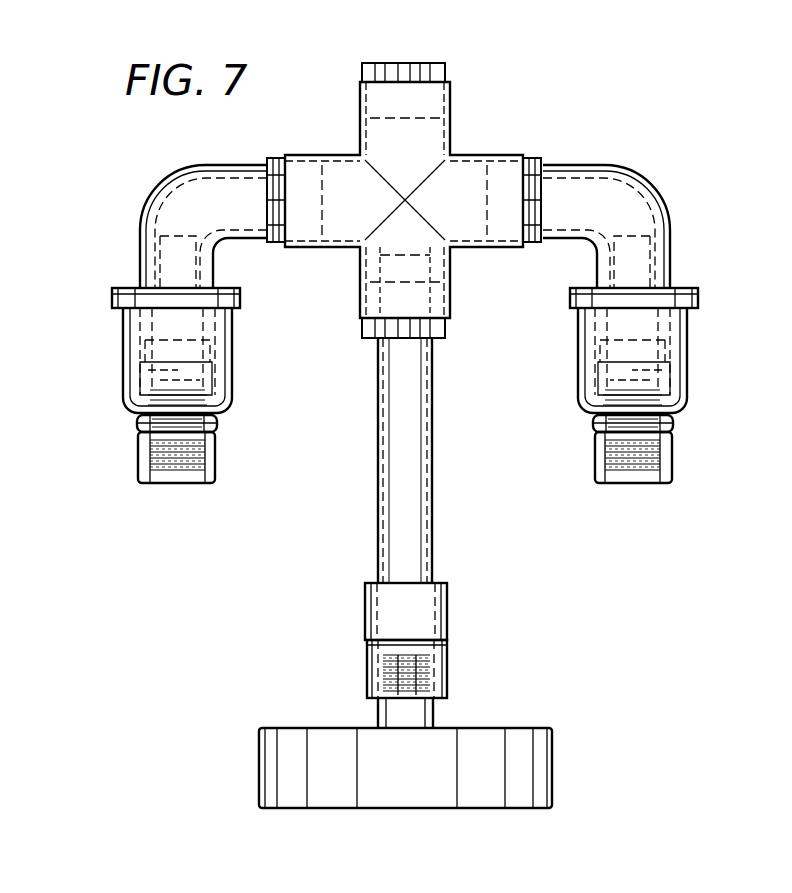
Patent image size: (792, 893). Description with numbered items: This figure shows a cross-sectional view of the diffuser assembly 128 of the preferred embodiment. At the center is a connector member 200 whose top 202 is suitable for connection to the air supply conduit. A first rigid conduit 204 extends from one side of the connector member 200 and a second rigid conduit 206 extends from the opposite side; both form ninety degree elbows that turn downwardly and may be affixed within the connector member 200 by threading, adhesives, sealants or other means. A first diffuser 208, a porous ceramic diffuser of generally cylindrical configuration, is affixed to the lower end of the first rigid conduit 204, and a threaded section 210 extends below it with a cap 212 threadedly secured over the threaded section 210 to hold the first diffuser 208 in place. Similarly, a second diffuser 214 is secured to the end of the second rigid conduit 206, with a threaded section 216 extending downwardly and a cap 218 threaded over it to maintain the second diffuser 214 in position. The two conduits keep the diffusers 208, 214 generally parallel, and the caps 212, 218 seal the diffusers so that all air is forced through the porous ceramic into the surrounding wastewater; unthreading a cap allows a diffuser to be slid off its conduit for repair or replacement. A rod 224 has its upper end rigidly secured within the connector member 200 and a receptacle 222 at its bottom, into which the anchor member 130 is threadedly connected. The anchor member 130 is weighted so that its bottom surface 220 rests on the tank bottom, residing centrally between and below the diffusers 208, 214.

The diffuser assembly 128 is at (533, 132).
The anchor member 130 is at (431, 770).
The connector member 200 is at (450, 115).
The top 202 is at (445, 63).
The first rigid conduit 204 is at (200, 165).
The second rigid conduit 206 is at (618, 165).
The first diffuser 208 is at (228, 342).
The threaded section 210 is at (215, 447).
The cap 212 is at (215, 483).
The second diffuser 214 is at (577, 355).
The threaded section 216 is at (672, 447).
The cap 218 is at (660, 485).
The bottom surface 220 is at (475, 808).
The receptacle 222 is at (447, 627).
The rod 224 is at (432, 482).